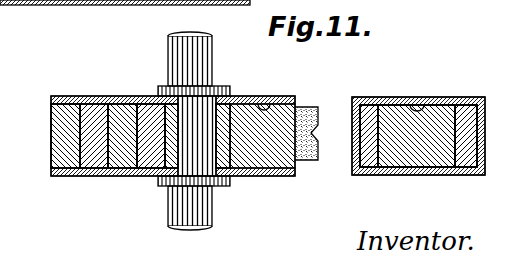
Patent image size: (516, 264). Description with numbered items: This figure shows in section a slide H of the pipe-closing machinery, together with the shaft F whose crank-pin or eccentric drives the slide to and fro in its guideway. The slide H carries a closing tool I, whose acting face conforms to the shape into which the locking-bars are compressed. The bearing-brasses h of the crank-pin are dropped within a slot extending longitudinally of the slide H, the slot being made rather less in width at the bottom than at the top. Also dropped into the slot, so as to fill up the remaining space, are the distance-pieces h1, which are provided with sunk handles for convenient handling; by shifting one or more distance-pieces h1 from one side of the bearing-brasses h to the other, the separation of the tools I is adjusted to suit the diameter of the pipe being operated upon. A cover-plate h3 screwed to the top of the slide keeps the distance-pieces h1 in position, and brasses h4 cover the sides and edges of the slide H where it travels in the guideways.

The slide H is at (60, 150).
The shaft F is at (178, 226).
The closing tool I is at (306, 160).
The bearing-brass h is at (237, 103).
The distance-piece h1 is at (137, 97).
The cover-plate h3 is at (74, 97).
The brass h4 is at (375, 97).